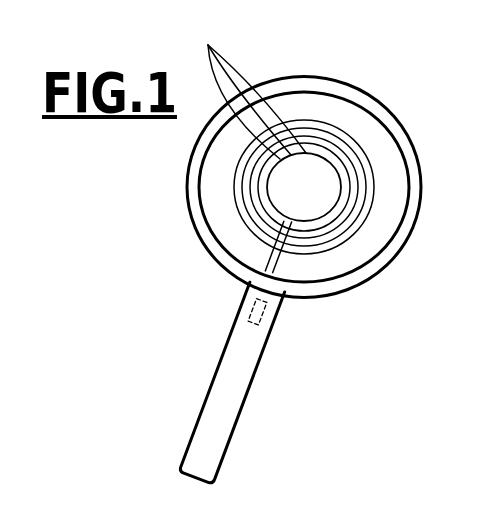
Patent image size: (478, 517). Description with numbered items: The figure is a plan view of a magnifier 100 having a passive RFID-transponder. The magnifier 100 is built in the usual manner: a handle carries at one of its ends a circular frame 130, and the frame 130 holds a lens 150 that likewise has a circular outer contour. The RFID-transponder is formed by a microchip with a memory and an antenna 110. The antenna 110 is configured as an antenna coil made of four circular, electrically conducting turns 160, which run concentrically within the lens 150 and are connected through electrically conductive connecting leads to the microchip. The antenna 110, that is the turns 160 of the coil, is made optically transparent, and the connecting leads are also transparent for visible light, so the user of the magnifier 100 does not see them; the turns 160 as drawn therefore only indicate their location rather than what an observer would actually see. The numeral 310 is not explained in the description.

The magnifier 100 is at (234, 252).
The antenna 110 is at (222, 178).
The frame 130 is at (338, 302).
The lens 150 is at (346, 114).
The turns 160 is at (242, 84).
The element 310 is at (434, 509).